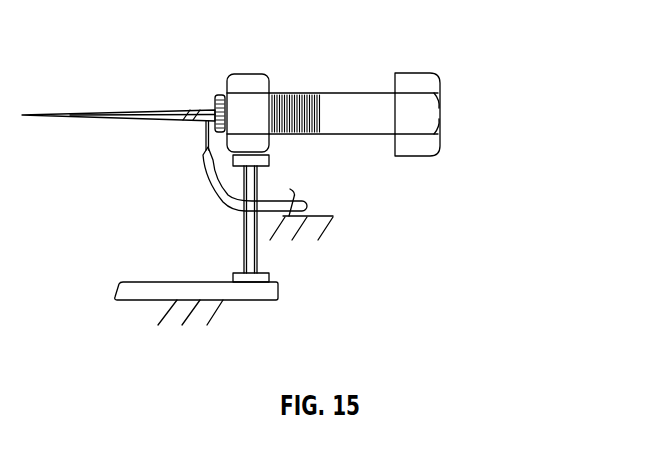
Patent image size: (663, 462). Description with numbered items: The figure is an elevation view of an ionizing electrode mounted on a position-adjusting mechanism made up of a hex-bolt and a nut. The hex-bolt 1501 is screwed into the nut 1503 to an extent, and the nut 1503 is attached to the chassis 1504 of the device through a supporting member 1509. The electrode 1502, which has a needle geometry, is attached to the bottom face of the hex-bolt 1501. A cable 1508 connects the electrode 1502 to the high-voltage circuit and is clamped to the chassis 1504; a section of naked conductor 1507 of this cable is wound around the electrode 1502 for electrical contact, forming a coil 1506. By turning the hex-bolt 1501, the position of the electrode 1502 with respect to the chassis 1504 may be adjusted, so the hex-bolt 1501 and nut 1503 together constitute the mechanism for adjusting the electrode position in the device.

The hex-bolt 1501 is at (443, 103).
The electrode 1502 is at (83, 109).
The nut 1503 is at (268, 80).
The chassis 1504 is at (218, 309).
The coil 1506 is at (193, 107).
The naked conductor 1507 is at (205, 133).
The cable 1508 is at (205, 178).
The supporting member 1509 is at (193, 282).